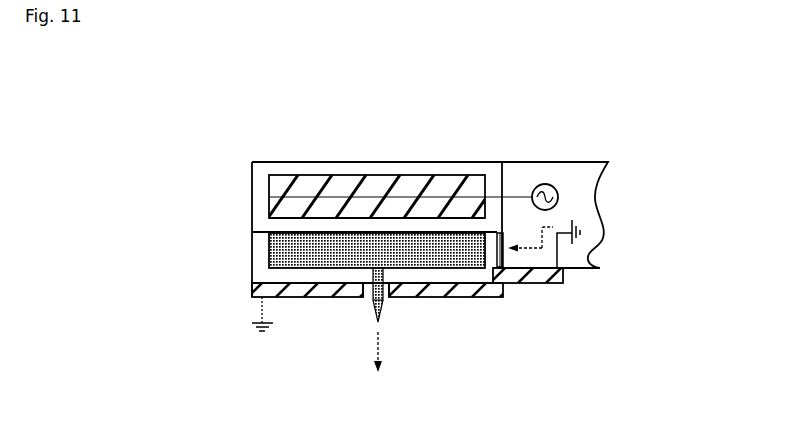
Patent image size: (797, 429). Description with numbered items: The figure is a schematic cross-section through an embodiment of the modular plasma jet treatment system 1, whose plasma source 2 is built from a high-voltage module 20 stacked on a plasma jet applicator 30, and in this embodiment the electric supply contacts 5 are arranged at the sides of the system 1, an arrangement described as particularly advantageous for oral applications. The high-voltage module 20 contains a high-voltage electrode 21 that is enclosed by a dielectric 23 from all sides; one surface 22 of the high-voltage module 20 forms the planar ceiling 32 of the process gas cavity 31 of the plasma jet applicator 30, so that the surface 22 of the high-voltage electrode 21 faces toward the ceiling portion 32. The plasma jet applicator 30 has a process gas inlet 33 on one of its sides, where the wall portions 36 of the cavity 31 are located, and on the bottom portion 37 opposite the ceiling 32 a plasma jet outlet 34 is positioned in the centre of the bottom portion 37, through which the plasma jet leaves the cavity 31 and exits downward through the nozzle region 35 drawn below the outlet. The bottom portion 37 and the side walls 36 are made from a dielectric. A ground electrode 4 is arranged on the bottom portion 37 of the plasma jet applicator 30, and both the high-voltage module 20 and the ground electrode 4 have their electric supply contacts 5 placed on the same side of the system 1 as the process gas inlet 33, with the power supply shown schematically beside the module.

The system 1 is at (611, 196).
The plasma source 2 is at (656, 154).
The ground electrode 4 is at (280, 287).
The electric supply contacts 5 is at (547, 183).
The high-voltage module 20 is at (333, 166).
The high-voltage electrode 21 is at (388, 190).
The surface of the high-voltage module 22 is at (302, 225).
The dielectric 23 is at (335, 165).
The plasma jet applicator 30 is at (365, 268).
The process gas cavity 31 is at (440, 247).
The ceiling 32 is at (331, 144).
The process gas inlet 33 is at (488, 250).
The plasma jet outlet 34 is at (378, 283).
The nozzle 35 is at (380, 305).
The wall portions 36 is at (257, 253).
The bottom portion 37 is at (450, 275).